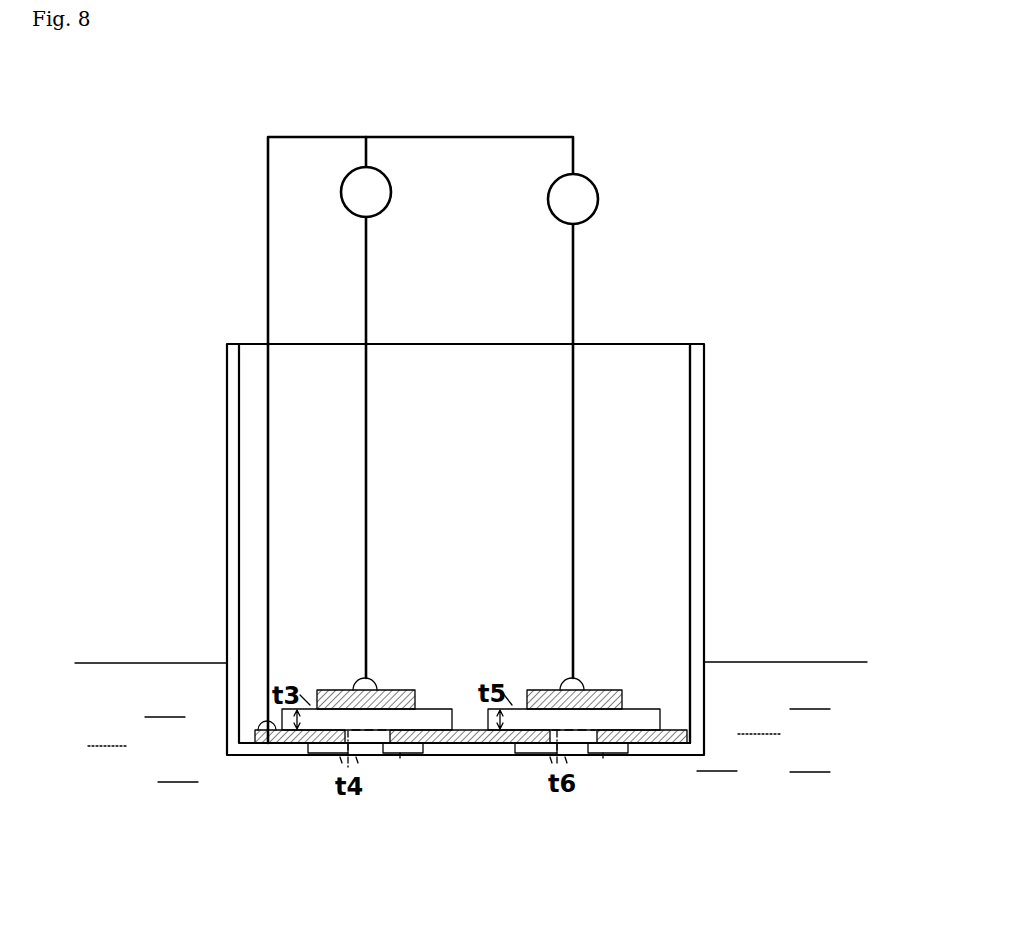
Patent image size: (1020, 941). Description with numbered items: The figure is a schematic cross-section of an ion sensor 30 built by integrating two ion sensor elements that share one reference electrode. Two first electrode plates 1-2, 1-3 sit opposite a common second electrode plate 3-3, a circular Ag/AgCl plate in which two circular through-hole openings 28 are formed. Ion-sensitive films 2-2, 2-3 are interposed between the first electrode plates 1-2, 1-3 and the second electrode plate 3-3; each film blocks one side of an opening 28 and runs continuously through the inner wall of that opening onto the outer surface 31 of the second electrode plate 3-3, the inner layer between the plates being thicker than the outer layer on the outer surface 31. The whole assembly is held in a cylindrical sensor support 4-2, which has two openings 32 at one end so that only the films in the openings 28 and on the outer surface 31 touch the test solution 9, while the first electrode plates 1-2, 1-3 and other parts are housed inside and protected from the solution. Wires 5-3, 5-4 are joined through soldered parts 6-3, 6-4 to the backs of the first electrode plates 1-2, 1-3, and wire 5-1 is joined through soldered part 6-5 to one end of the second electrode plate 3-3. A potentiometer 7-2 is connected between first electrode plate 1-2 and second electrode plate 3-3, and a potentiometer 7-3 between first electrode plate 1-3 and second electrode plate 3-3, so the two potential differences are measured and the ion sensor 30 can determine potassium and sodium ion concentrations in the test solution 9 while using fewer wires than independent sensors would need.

The ion sensor 30 is at (742, 342).
The sensor support 4-2 is at (699, 541).
The test solution 9 is at (793, 673).
The wire 5-1 is at (268, 245).
The wire 5-3 is at (367, 497).
The wire 5-4 is at (573, 425).
The potentiometer 7-2 is at (391, 193).
The potentiometer 7-3 is at (598, 206).
The second electrode plate 3-3 is at (250, 757).
The soldered part 6-5 is at (257, 725).
The first electrode plate 1-2 is at (360, 691).
The soldered part 6-3 is at (320, 688).
The ion-sensitive film 2-2 is at (365, 760).
The opening 32 is at (316, 758).
The outer surface 31 is at (330, 760).
The opening 28 is at (400, 760).
The first electrode plate 1-3 is at (633, 690).
The soldered part 6-4 is at (580, 678).
The ion-sensitive film 2-3 is at (585, 758).